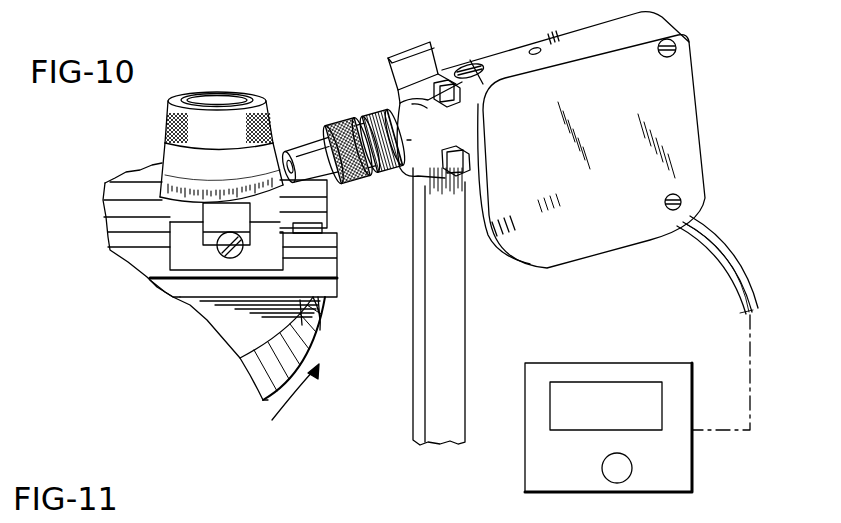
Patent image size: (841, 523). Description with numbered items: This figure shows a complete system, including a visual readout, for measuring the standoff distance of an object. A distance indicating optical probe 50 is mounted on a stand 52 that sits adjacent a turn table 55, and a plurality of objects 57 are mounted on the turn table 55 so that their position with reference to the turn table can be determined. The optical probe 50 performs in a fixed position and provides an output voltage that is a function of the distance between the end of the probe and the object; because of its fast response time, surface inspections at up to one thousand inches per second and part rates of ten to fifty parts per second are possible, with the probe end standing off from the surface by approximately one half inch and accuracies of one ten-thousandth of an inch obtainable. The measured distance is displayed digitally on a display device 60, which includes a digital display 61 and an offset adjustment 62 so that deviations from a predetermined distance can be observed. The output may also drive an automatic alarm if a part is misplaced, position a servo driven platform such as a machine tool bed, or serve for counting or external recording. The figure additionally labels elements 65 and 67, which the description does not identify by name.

In FIG. 10, the distance indicating optical probe 50 is at (519, 43).
In FIG. 11, the distance indicating optical probe 50 is at (328, 522).
In FIG. 10, the stand 52 is at (410, 312).
In FIG. 10, the turn table 55 is at (258, 376).
In FIG. 10, the objects 57 is at (178, 151).
In FIG. 10, the display device 60 is at (588, 427).
In FIG. 10, the digital display 61 is at (556, 416).
In FIG. 10, the offset adjustment 62 is at (620, 474).
In FIG. 11, the component 65 is at (385, 522).
In FIG. 10, the valve body 67 is at (441, 160).